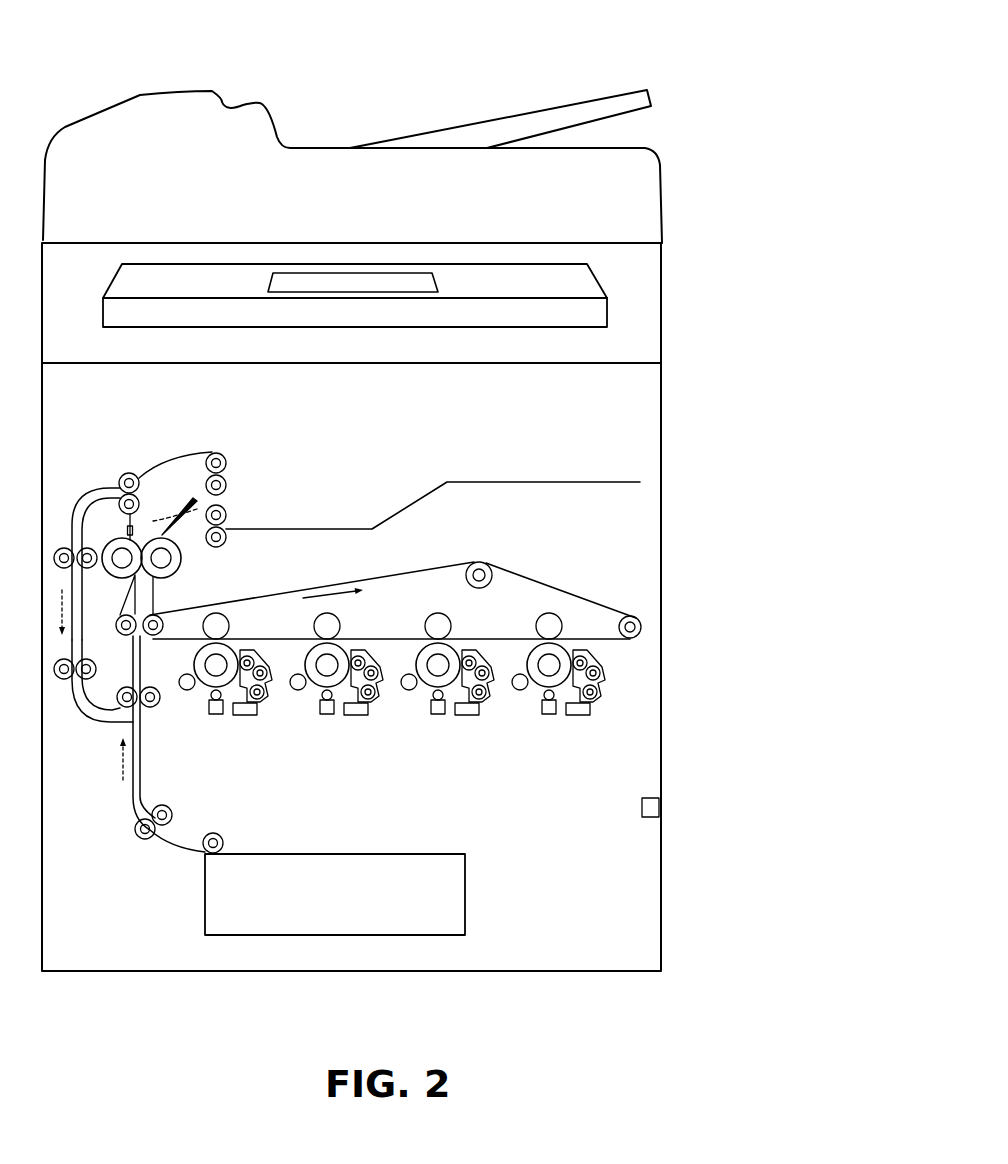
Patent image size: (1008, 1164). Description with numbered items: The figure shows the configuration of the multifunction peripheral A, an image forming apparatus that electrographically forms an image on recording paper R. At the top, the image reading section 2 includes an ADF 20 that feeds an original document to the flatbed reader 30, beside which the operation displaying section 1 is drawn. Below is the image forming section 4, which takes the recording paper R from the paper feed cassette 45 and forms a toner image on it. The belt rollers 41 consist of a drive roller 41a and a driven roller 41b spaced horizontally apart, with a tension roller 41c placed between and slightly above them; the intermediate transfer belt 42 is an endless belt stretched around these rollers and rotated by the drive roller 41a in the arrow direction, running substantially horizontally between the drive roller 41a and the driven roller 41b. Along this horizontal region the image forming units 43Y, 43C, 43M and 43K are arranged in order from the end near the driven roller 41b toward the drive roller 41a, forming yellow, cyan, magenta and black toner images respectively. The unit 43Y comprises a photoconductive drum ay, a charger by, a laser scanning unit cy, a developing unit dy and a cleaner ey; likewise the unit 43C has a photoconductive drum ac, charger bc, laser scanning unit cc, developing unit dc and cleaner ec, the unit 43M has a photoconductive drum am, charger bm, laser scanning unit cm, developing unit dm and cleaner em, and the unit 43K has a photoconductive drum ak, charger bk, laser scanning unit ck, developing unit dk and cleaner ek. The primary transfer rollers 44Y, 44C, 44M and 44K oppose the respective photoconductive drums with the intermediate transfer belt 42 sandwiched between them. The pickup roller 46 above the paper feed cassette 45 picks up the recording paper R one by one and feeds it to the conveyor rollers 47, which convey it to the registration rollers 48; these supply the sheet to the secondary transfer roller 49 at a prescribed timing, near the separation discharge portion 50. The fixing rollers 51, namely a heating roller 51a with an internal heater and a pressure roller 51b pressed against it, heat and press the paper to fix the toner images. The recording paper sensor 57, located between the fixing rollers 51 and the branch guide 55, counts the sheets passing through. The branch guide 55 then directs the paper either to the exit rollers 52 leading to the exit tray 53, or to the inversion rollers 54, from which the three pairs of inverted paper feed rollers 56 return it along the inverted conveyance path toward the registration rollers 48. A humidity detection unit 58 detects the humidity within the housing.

The multifunction peripheral A is at (538, 73).
The operation displaying section 1 is at (598, 278).
The image reading section 2 is at (143, 98).
The ADF 20 is at (317, 163).
The flatbed reader 30 is at (663, 305).
The image forming section 4 is at (663, 583).
The belt rollers 41 is at (392, 603).
The drive roller 41a is at (166, 636).
The driven roller 41b is at (618, 631).
The tension roller 41c is at (466, 578).
The intermediate transfer belt 42 is at (322, 586).
The image forming unit 43K is at (226, 729).
The image forming unit 43M is at (338, 729).
The image forming unit 43C is at (450, 729).
The image forming unit 43Y is at (561, 729).
The primary transfer roller 44K is at (230, 622).
The primary transfer roller 44M is at (341, 622).
The primary transfer roller 44C is at (452, 623).
The primary transfer roller 44Y is at (543, 614).
The photoconductive drum ak is at (205, 703).
The charger bk is at (218, 715).
The laser scanning unit ck is at (245, 716).
The developing unit dk is at (270, 680).
The cleaner ek is at (185, 691).
The photoconductive drum am is at (316, 703).
The charger bm is at (329, 715).
The laser scanning unit cm is at (356, 716).
The developing unit dm is at (381, 680).
The cleaner em is at (296, 691).
The photoconductive drum ac is at (427, 703).
The charger bc is at (440, 715).
The laser scanning unit cc is at (467, 716).
The developing unit dc is at (492, 680).
The cleaner ec is at (407, 691).
The photoconductive drum ay is at (538, 703).
The charger by is at (551, 715).
The laser scanning unit cy is at (578, 716).
The developing unit dy is at (603, 680).
The cleaner ey is at (518, 691).
The paper feed cassette 45 is at (340, 855).
The pickup roller 46 is at (225, 841).
The conveyor rollers 47 is at (126, 814).
The registration rollers 48 is at (118, 677).
The secondary transfer roller 49 is at (120, 628).
The separation discharge portion 50 is at (130, 600).
The fixing rollers 51 is at (172, 533).
The heating roller 51a is at (182, 558).
The pressure roller 51b is at (154, 588).
The exit rollers 52 is at (228, 517).
The exit tray 53 is at (345, 528).
The inversion rollers 54 is at (228, 460).
The branch guide 55 is at (193, 498).
The inverted paper feed rollers 56 is at (120, 458).
The recording paper sensor 57 is at (132, 522).
The humidity detection unit 58 is at (641, 812).
The recording paper R is at (143, 770).